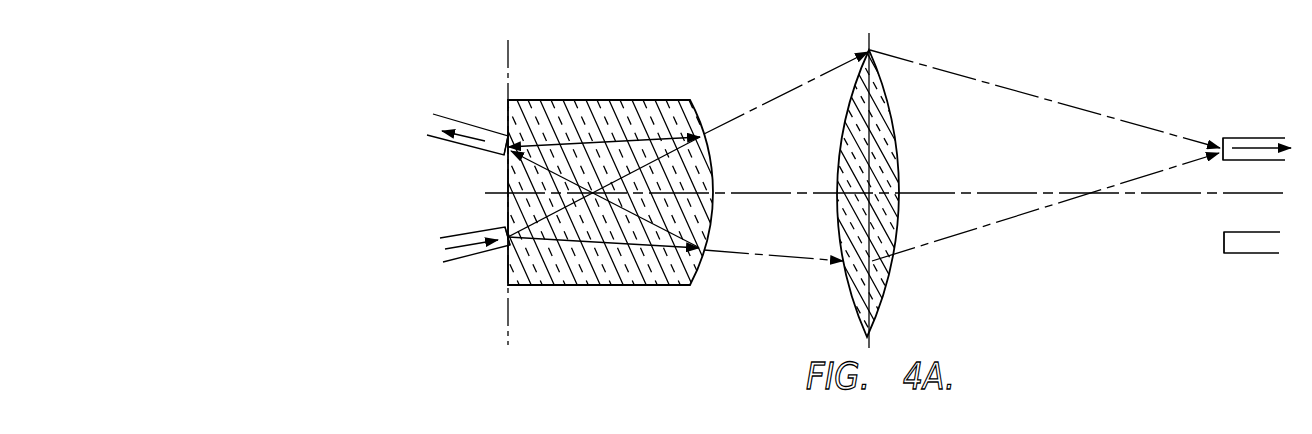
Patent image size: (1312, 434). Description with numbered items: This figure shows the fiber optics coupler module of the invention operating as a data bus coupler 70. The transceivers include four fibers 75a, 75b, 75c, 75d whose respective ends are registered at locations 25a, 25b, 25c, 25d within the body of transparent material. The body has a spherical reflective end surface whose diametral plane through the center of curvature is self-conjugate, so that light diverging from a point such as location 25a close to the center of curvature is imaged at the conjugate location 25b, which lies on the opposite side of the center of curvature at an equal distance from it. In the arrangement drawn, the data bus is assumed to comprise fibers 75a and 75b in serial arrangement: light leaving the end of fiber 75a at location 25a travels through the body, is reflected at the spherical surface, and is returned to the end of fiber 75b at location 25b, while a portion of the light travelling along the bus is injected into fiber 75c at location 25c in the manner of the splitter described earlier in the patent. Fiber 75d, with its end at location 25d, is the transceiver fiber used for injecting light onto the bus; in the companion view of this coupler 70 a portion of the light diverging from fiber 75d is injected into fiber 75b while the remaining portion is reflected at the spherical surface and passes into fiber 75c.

The data bus coupler 70 is at (787, 337).
The fiber 75a is at (484, 258).
The fiber 75b is at (483, 127).
The fiber 75c is at (1241, 138).
The fiber 75d is at (1244, 254).
The first location 25a is at (510, 230).
The conjugate second location 25b is at (510, 156).
The location 25c is at (1222, 145).
The location 25d is at (1226, 241).